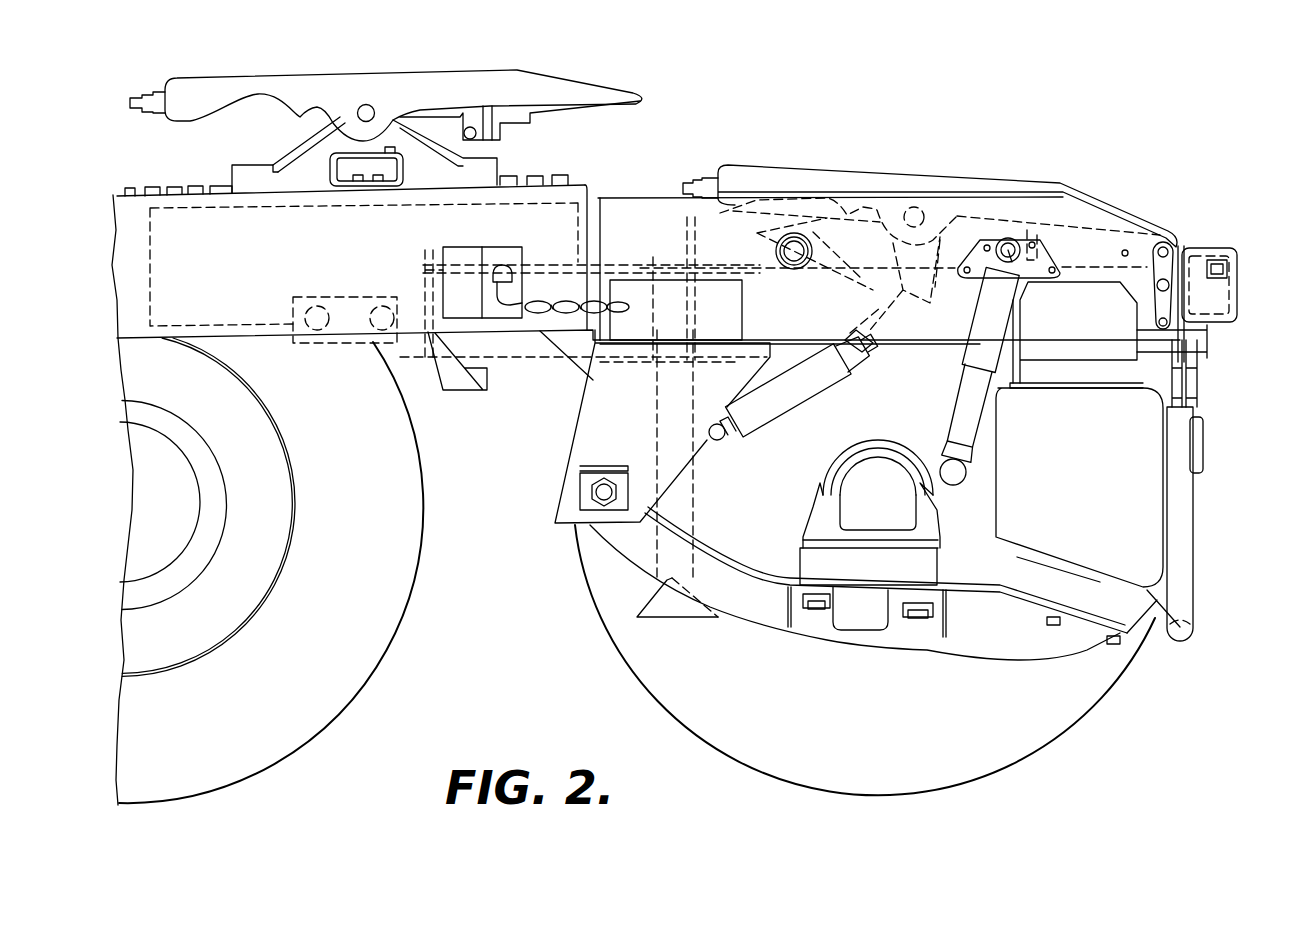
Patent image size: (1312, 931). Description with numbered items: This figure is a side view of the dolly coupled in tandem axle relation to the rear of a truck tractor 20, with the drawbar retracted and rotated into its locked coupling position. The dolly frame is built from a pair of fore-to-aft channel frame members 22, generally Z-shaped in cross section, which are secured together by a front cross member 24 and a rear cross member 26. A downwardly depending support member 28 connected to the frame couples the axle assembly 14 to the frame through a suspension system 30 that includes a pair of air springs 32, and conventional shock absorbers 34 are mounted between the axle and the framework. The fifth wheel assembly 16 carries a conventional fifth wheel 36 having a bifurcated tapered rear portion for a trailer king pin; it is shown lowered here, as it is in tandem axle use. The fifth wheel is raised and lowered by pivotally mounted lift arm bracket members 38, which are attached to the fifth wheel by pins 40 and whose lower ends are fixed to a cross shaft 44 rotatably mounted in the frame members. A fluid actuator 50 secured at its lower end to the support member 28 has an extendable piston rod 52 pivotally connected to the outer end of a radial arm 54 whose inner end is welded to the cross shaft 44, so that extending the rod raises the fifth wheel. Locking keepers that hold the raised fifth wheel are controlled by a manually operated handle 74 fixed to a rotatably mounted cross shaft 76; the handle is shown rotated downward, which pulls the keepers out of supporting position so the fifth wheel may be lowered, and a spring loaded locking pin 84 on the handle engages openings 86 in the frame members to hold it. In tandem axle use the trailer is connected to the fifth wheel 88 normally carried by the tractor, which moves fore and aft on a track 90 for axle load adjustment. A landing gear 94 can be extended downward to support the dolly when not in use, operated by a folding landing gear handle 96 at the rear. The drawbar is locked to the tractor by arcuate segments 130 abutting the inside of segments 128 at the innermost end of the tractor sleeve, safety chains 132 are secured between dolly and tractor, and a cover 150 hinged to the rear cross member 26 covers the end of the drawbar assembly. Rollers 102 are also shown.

The axle assembly 14 is at (806, 500).
The fifth wheel assembly 16 is at (848, 164).
The truck tractor 20 is at (192, 179).
The channel frame members 22 is at (630, 214).
The front cross member 24 is at (700, 215).
The rear cross member 26 is at (1158, 355).
The support member 28 is at (667, 465).
The suspension system 30 is at (856, 646).
The air springs 32 is at (1102, 473).
The shock absorbers 34 is at (962, 408).
The fifth wheel 36 is at (992, 189).
The lift arm bracket members 38 is at (925, 297).
The pins 40 is at (921, 208).
The cross shaft 44 is at (790, 256).
The fluid actuator 50 is at (780, 405).
The piston rod 52 is at (858, 350).
The radial arm 54 is at (827, 270).
The handle 74 is at (1172, 321).
The cross shaft 76 is at (1168, 252).
The locking pin 84 is at (1166, 284).
The openings 86 is at (1128, 251).
The fifth wheel 88 is at (470, 77).
The track 90 is at (566, 190).
The landing gear 94 is at (673, 624).
The landing gear handle 96 is at (1205, 446).
The rollers 102 is at (316, 338).
The segments 128 is at (447, 367).
The arcuate segments 130 is at (400, 296).
The safety chains 132 is at (571, 300).
The cover 150 is at (1210, 339).